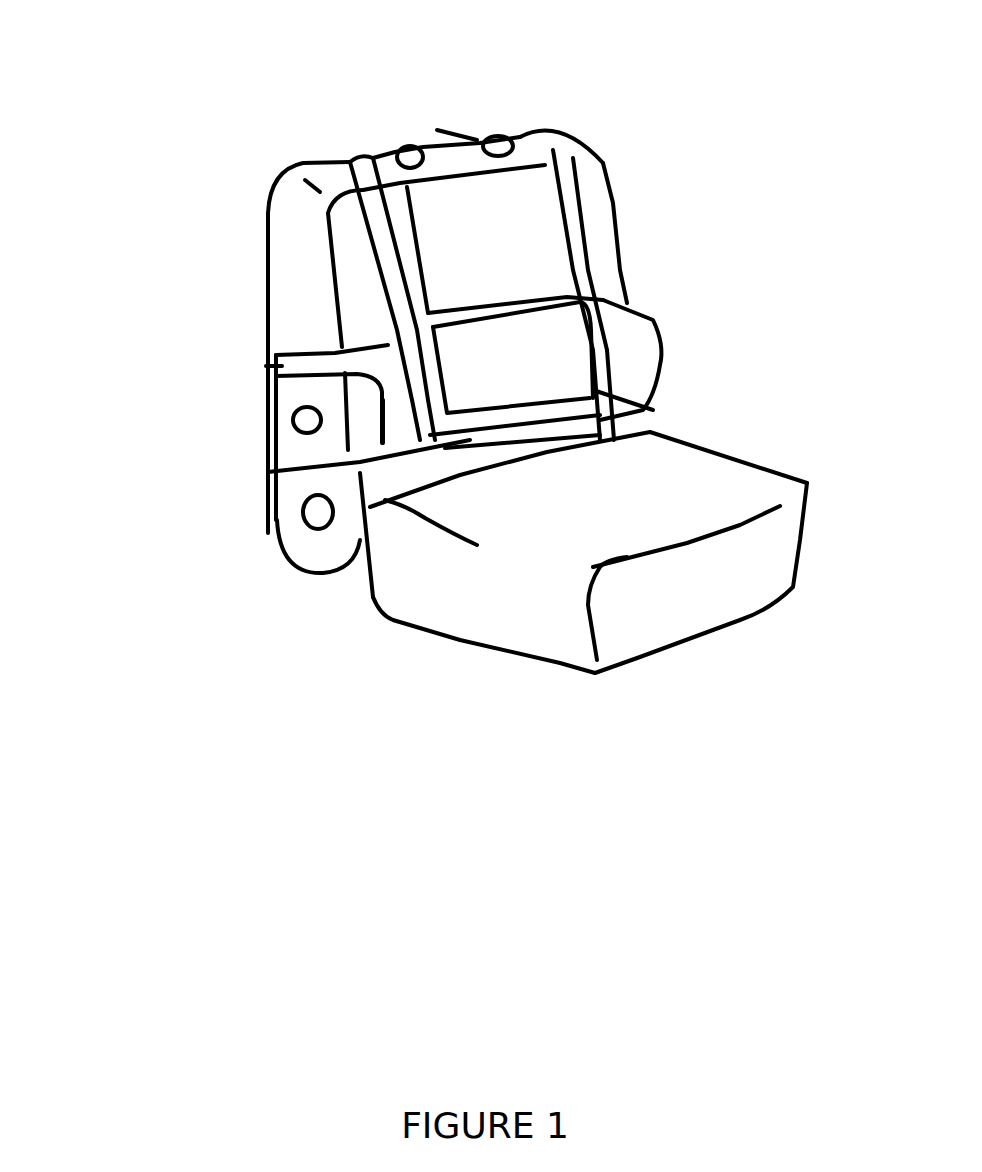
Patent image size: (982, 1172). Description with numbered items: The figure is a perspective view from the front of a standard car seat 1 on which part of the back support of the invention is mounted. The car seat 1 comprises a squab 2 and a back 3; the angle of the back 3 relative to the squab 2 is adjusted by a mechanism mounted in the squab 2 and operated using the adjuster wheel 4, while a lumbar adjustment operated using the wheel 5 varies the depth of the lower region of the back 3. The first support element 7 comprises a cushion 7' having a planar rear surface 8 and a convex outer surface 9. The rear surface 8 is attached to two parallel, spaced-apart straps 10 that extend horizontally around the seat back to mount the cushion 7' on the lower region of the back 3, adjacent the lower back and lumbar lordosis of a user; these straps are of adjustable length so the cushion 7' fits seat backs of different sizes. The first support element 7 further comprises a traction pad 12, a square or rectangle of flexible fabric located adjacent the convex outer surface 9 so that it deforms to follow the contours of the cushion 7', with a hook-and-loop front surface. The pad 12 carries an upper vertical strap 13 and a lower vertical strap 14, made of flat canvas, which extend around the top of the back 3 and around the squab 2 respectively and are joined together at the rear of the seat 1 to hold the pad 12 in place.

The car seat 1 is at (636, 156).
The squab 2 is at (767, 555).
The back 3 is at (297, 223).
The adjuster wheel 4 is at (315, 512).
The wheel 5 is at (297, 420).
The first support element 7 is at (704, 360).
The cushion 7' is at (219, 397).
The planar rear surface 8 is at (440, 440).
The convex outer surface 9 is at (425, 430).
The straps 10 is at (272, 366).
The traction pad 12 is at (517, 337).
The upper vertical strap 13 is at (580, 228).
The lower vertical strap 14 is at (600, 441).